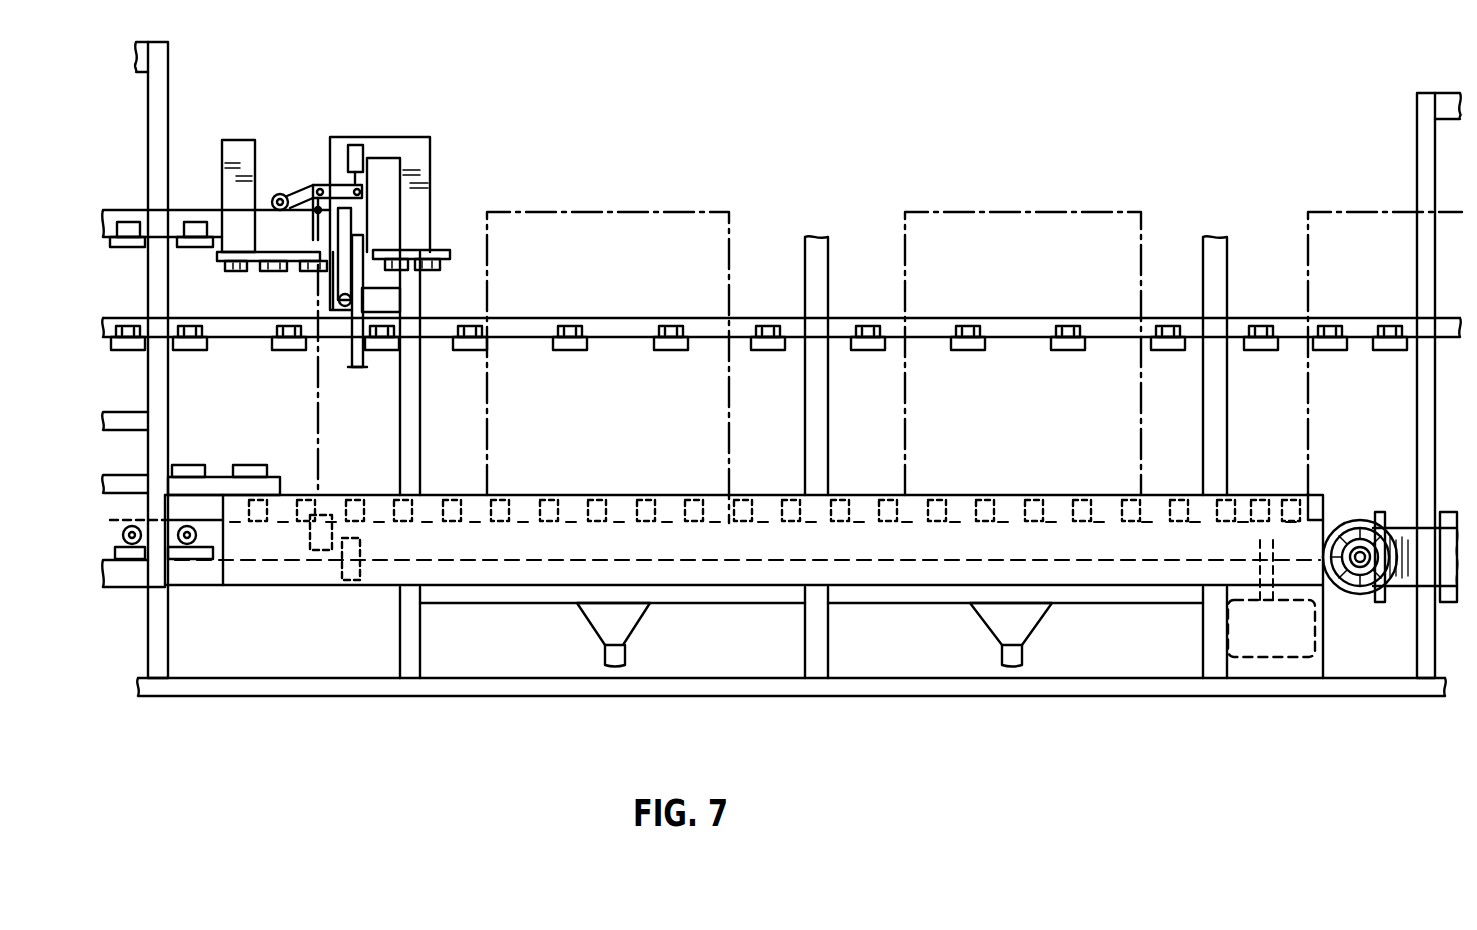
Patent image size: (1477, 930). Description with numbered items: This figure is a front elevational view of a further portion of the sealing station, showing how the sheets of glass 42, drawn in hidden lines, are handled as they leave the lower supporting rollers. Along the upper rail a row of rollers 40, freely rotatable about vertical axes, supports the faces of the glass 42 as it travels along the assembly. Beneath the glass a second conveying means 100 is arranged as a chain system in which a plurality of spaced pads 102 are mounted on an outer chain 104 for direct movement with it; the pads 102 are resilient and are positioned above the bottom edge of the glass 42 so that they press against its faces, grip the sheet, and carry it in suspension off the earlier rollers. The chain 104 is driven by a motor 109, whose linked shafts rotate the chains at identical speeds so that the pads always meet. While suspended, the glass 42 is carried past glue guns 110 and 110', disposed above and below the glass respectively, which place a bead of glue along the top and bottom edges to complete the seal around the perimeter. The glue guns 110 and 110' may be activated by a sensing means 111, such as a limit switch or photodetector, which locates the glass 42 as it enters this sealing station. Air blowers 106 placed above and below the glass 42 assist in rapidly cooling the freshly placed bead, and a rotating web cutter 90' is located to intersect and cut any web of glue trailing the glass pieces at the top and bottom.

The rollers 40 is at (867, 352).
The sheets of glass 42 is at (642, 237).
The rotating web cutter 90' is at (374, 413).
The second conveying means 100 is at (446, 602).
The pads 102 is at (848, 492).
The outer chain 104 is at (772, 562).
The air blowers 106 is at (605, 627).
The motor 109 is at (1270, 658).
The glue gun 110 is at (323, 224).
The glue gun 110' is at (262, 574).
The sensing means 111 is at (297, 188).